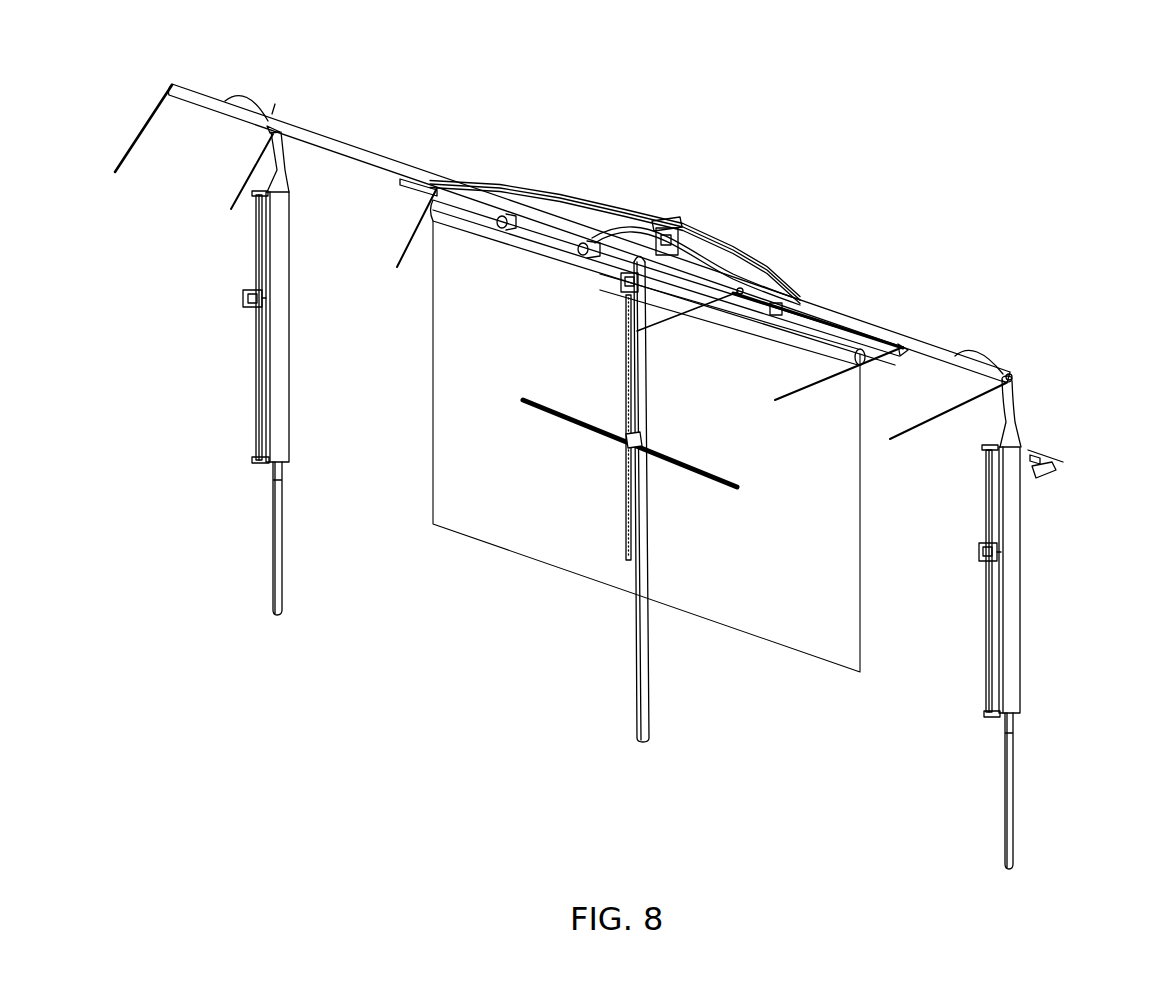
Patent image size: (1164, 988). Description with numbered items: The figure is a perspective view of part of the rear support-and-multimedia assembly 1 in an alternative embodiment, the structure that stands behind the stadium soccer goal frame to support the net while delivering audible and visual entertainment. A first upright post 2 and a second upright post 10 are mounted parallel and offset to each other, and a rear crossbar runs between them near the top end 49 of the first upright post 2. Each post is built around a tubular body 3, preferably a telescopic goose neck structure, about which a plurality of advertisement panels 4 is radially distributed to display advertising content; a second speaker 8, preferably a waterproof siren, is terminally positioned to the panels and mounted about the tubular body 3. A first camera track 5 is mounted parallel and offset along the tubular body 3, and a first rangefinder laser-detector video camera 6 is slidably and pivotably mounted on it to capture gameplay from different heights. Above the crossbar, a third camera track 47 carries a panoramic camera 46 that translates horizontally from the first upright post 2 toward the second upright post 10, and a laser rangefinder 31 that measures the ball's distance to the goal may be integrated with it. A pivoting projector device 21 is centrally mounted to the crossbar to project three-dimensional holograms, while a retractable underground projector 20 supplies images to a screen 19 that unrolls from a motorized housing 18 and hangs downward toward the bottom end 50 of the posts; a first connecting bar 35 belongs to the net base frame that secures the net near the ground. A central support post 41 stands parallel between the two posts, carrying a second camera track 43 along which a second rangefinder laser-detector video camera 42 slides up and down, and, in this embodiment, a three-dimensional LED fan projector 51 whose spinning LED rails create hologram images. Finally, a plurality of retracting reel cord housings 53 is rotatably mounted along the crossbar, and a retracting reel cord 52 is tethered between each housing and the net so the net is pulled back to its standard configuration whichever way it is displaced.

The rear support-and-multimedia assembly 1 is at (572, 90).
The first upright post 2 is at (1013, 740).
The tubular body 3 is at (276, 497).
The advertisement panels 4 is at (289, 282).
The first camera track 5 is at (258, 358).
The first rangefinder laser-detector video camera 6 is at (243, 305).
The second speaker 8 is at (288, 190).
The second upright post 10 is at (1078, 580).
The motorized housing 18 is at (742, 333).
The screen 19 is at (433, 406).
The retractable underground projector 20 is at (1060, 470).
The pivoting projector device 21 is at (585, 257).
The laser rangefinder 31 is at (503, 230).
The first connecting bar 35 is at (810, 306).
The central support post 41 is at (649, 533).
The second rangefinder laser-detector video camera 42 is at (621, 284).
The second camera track 43 is at (649, 375).
The panoramic camera 46 is at (672, 218).
The third camera track 47 is at (590, 190).
The top end 49 is at (987, 346).
The bottom end 50 is at (1022, 853).
The three-dimensional LED fan projector 51 is at (625, 445).
The retracting reel cord 52 is at (397, 262).
The retracting reel cord housings 53 is at (282, 138).